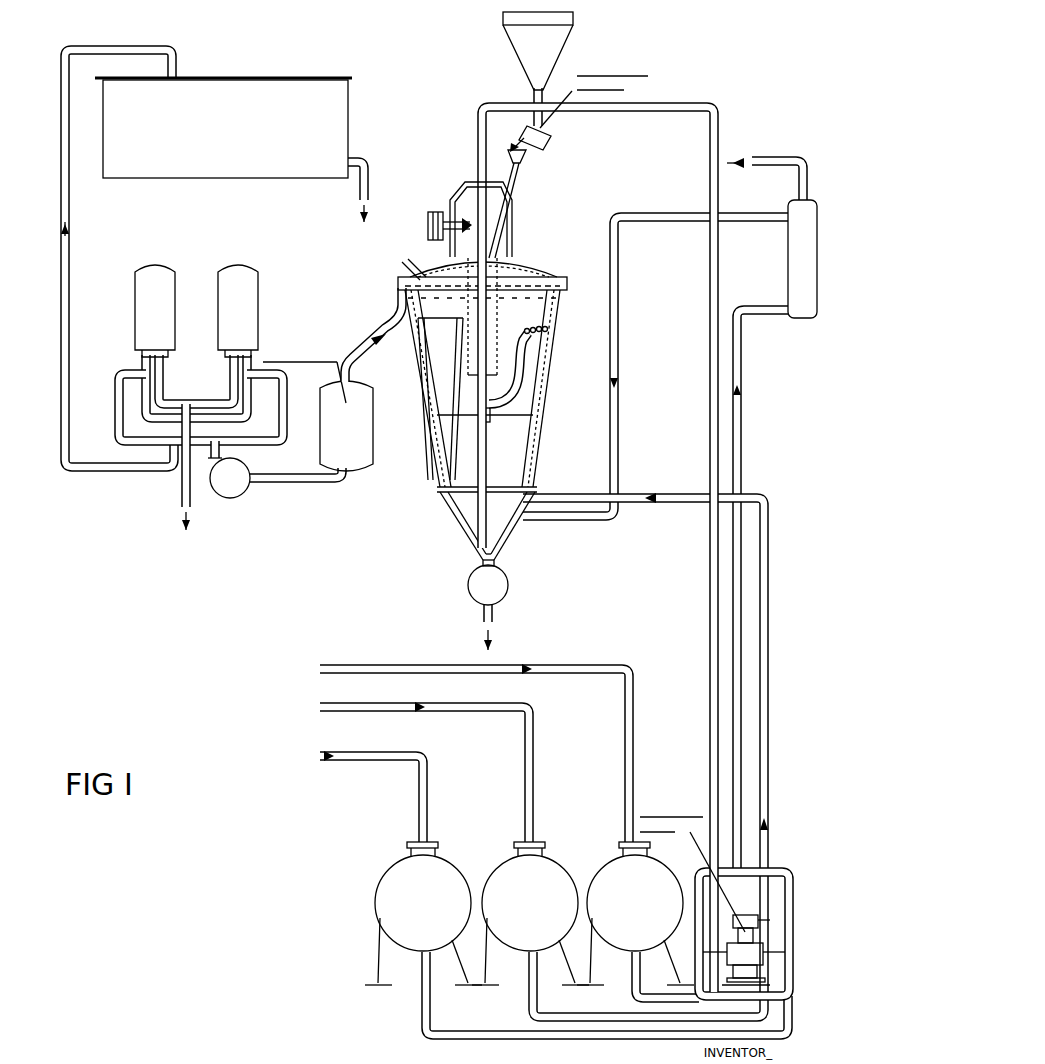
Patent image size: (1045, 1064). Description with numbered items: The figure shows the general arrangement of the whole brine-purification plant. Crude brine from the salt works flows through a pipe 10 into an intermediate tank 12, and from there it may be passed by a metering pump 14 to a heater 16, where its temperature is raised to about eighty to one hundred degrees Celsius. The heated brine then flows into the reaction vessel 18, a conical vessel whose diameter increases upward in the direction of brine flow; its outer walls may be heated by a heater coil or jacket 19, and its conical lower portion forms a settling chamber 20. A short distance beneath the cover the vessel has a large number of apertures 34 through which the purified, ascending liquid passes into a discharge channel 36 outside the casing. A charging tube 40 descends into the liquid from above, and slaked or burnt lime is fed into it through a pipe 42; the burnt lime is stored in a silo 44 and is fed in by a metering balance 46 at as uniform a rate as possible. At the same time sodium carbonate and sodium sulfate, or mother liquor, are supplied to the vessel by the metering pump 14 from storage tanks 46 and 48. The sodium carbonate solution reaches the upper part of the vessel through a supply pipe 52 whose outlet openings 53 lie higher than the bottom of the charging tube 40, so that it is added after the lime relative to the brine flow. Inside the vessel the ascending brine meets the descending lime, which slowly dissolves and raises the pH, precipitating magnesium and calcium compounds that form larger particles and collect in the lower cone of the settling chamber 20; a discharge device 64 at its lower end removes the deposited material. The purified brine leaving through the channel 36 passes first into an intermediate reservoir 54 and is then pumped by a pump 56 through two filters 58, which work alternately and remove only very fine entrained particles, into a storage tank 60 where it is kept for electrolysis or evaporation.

The pipe 10 is at (407, 665).
The intermediate tank 12 is at (617, 946).
The metering pump 14 is at (765, 951).
The heater 16 is at (788, 262).
The reaction vessel 18 is at (445, 490).
The jacket 19 is at (430, 443).
The settling chamber 20 is at (463, 525).
The apertures 34 is at (427, 246).
The discharge channel 36 is at (398, 284).
The charging tube 40 is at (537, 259).
The pipe 42 is at (514, 184).
The silo 44 is at (512, 43).
The metering balance 46 is at (531, 144).
The storage tank 48 is at (384, 925).
The supply pipe 52 is at (519, 379).
The outlet openings 53 is at (548, 336).
The intermediate reservoir 54 is at (345, 463).
The pump 56 is at (236, 493).
The filters 58 is at (218, 270).
The storage tank 60 is at (166, 173).
The discharge device 64 is at (509, 581).